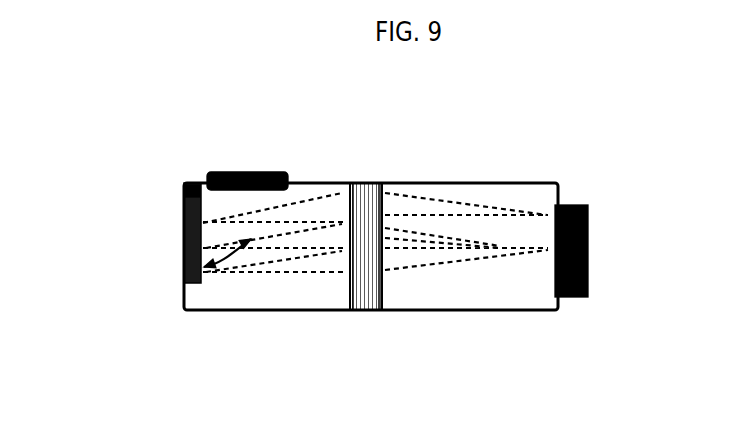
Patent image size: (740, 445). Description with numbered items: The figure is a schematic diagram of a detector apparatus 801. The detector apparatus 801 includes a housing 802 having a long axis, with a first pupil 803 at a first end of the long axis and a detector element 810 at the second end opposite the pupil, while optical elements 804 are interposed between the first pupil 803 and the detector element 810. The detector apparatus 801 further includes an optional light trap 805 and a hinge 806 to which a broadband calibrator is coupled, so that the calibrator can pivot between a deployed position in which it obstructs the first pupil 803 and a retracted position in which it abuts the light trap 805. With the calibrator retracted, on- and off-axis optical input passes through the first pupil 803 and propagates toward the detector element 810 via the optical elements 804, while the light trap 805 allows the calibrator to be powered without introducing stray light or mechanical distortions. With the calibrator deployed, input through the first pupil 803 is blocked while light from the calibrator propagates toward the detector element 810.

The detector apparatus 801 is at (303, 150).
The housing 802 is at (265, 310).
The first pupil 803 is at (178, 249).
The optical elements 804 is at (360, 297).
The light trap 805 is at (243, 178).
The hinge 806 is at (187, 197).
The detector element 810 is at (588, 268).